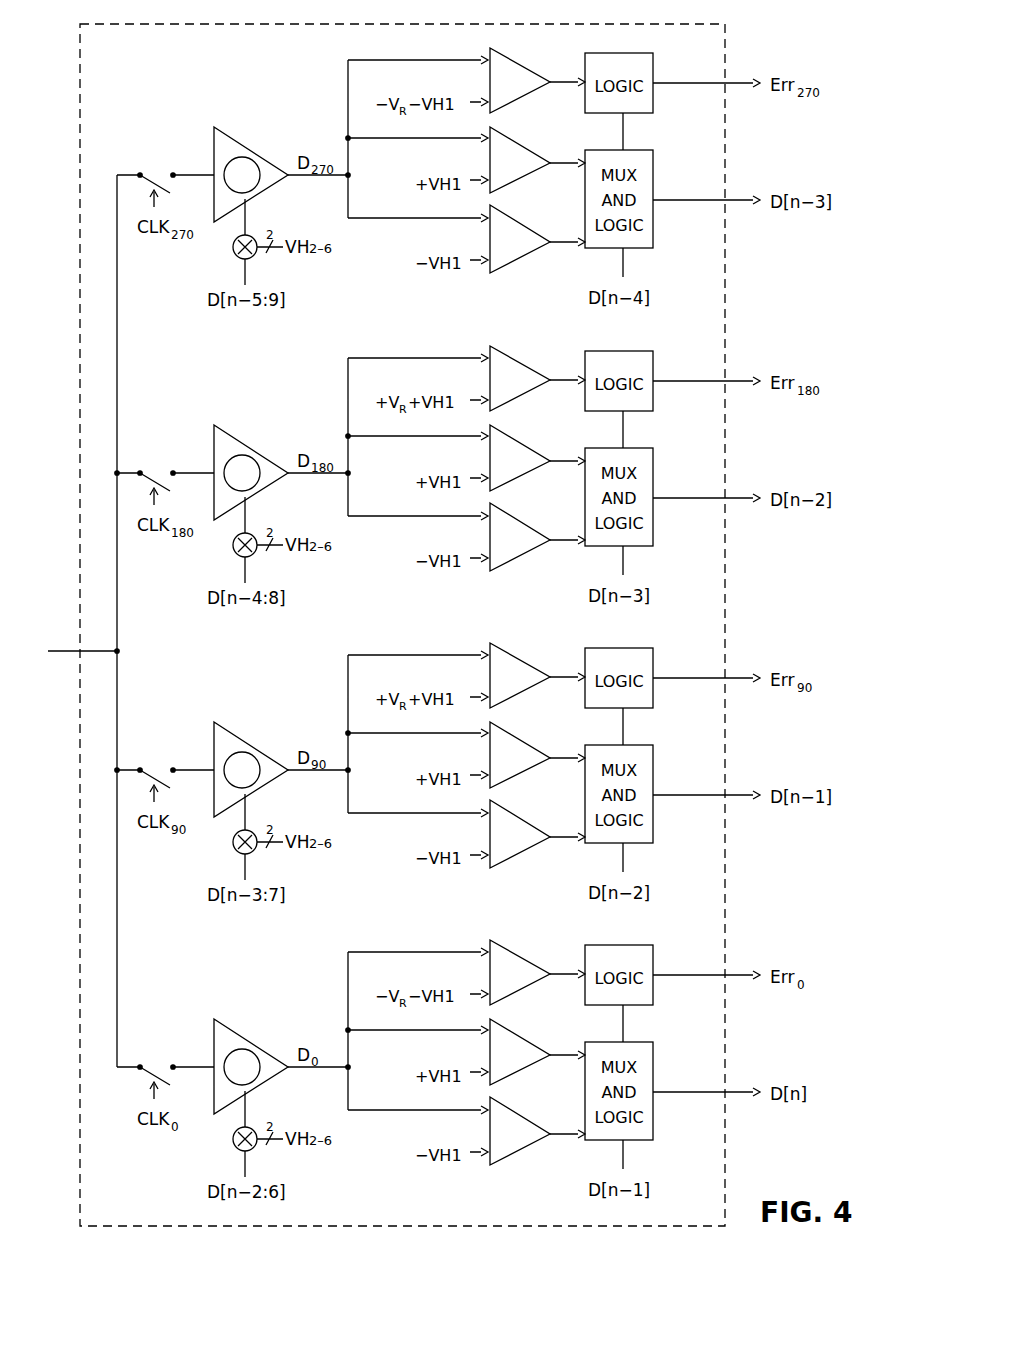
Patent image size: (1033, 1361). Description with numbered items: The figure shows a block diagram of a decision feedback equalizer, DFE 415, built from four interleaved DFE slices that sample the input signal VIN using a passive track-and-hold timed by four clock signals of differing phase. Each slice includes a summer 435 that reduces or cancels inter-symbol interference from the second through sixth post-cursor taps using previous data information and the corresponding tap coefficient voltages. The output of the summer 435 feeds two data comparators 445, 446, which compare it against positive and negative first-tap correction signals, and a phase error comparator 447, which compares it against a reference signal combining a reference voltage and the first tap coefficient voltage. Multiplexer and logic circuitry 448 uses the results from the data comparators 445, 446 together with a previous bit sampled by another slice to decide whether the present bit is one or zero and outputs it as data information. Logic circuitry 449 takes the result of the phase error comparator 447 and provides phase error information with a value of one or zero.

The decision feedback equalizer (DFE) 415 is at (106, 23).
The summer 435 is at (253, 152).
The data comparator 445 is at (524, 174).
The data comparator 446 is at (524, 253).
The phase error comparator 447 is at (524, 93).
The multiplexer and logic circuitry 448 is at (655, 171).
The logic circuitry 449 is at (655, 73).